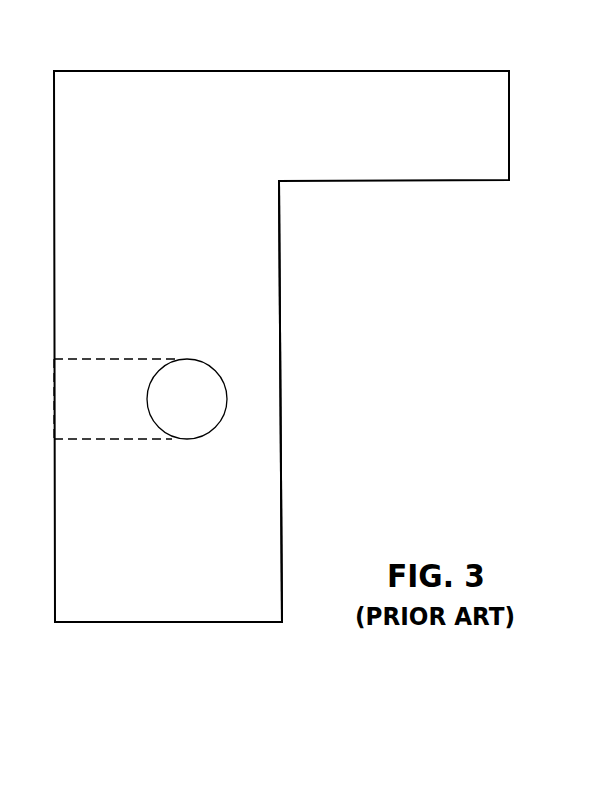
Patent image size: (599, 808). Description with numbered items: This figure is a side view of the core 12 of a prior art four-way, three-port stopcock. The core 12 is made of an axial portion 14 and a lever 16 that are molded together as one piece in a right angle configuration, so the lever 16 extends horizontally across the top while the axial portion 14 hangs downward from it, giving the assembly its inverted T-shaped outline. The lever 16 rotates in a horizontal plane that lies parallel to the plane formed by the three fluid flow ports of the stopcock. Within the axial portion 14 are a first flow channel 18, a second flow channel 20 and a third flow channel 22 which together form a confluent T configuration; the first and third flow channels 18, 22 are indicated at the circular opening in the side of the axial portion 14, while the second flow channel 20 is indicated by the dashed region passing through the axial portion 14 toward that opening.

The core 12 is at (226, 58).
The axial portion 14 is at (282, 438).
The lever 16 is at (443, 69).
The first flow channel 18 is at (263, 395).
The third flow channel 22 is at (213, 392).
The second flow channel 20 is at (105, 421).